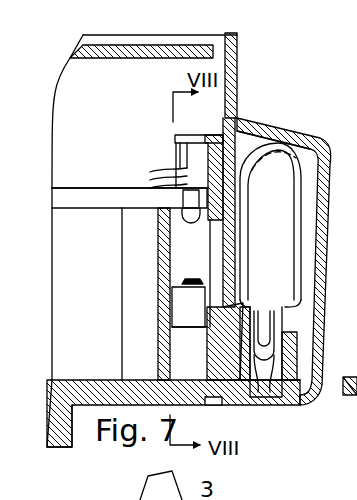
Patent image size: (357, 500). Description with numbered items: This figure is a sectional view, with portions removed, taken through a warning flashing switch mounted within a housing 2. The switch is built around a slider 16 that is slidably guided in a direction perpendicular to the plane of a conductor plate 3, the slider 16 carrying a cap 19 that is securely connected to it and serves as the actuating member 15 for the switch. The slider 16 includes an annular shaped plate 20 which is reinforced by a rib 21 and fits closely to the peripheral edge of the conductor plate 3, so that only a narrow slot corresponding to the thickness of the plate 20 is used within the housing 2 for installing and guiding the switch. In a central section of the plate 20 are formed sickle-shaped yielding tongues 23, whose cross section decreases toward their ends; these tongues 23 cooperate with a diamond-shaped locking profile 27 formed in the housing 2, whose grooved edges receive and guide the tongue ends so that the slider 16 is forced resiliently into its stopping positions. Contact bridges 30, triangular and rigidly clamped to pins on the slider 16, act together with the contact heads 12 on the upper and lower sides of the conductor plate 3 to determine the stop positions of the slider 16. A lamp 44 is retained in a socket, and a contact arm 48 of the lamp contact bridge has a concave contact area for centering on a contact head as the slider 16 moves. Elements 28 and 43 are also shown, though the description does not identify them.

The housing 2 is at (90, 410).
The conductor plate 3 is at (79, 200).
The contact heads 12 is at (165, 178).
The actuating member 15 is at (328, 100).
The slider 16 is at (186, 126).
The cap 19 is at (283, 131).
The annular shaped plate 20 is at (297, 230).
The rib 21 is at (186, 144).
The sickle-shaped yielding tongues 23 is at (212, 236).
The diamond-shaped locking profile 27 is at (205, 355).
The bottom floor 28 is at (90, 383).
The contact bridges 30 is at (180, 298).
The bottom seal 43 is at (299, 390).
The lamp 44 is at (282, 253).
The contact arm 48 is at (248, 246).